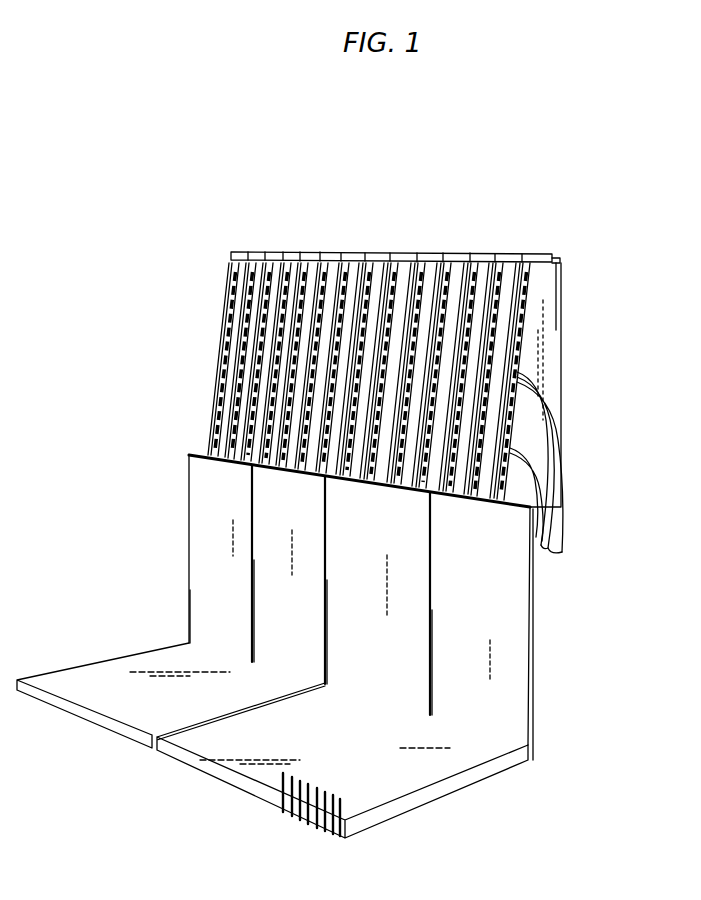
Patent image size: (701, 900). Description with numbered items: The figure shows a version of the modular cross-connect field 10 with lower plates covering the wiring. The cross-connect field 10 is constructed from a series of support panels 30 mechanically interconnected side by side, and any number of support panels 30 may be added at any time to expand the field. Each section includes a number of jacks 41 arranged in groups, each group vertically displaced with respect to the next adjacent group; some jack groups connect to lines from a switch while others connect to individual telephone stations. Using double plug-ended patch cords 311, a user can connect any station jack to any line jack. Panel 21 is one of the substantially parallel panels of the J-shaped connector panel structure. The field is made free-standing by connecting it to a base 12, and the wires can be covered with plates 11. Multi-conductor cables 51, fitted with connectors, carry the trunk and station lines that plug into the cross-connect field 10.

The modular cross-connect field 10 is at (586, 803).
The plates 11 is at (512, 628).
The base 12 is at (455, 766).
The panel 21 is at (528, 355).
The support panels 30 is at (544, 251).
The jacks 41 is at (528, 308).
The double plug-ended patch cords 311 is at (554, 464).
The multi-conductor cables 51 is at (335, 803).